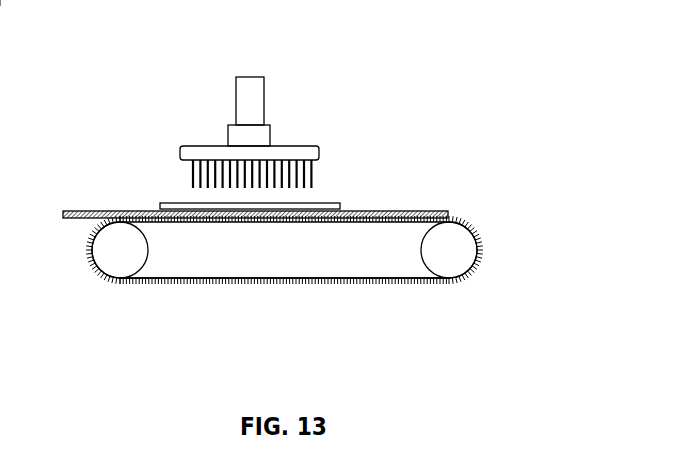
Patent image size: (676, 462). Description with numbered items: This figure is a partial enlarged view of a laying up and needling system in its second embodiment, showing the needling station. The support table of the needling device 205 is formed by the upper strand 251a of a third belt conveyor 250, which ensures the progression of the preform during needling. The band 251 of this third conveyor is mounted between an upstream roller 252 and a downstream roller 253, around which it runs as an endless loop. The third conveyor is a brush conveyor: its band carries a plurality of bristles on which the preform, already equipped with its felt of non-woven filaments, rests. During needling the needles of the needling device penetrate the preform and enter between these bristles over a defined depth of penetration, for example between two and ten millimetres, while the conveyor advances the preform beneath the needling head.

The needling device 205 is at (265, 98).
The third belt conveyor 250 is at (322, 281).
The band 251 is at (152, 283).
The upper strand 251a is at (221, 222).
The upstream roller 252 is at (103, 250).
The downstream roller 253 is at (480, 252).